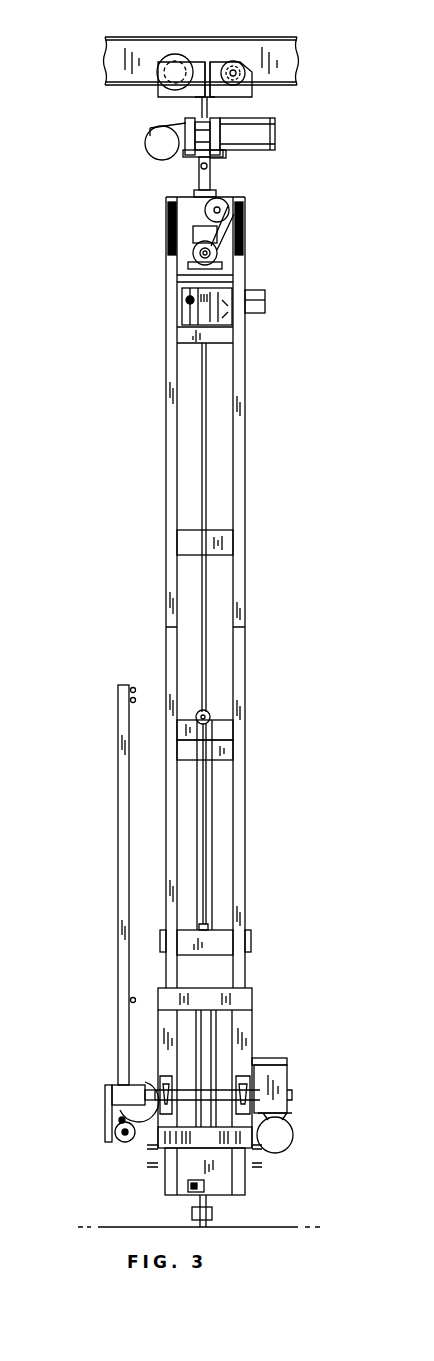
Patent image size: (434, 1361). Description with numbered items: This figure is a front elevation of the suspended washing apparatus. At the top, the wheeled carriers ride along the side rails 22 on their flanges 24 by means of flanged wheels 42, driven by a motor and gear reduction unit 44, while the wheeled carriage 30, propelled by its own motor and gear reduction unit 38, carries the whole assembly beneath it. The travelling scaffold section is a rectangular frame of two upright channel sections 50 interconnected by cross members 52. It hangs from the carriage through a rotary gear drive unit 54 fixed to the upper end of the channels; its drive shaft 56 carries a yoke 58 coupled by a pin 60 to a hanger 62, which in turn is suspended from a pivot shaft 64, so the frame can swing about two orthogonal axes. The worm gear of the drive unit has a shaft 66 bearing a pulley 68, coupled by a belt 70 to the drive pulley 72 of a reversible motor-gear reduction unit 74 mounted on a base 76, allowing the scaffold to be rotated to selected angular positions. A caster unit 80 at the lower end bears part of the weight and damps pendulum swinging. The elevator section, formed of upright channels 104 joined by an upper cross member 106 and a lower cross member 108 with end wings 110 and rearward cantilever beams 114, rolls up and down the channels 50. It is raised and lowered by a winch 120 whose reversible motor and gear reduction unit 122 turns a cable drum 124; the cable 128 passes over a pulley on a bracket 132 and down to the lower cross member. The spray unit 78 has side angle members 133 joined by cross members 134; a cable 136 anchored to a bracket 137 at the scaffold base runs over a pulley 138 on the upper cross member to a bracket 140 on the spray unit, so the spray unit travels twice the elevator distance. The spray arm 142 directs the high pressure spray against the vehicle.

The side rail 22 is at (108, 52).
The flange 24 is at (108, 84).
The wheeled carriage 30 is at (138, 140).
The motor and gear reduction unit 38 is at (258, 120).
The flanged wheel 42 is at (234, 58).
The motor and gear reduction unit 44 is at (172, 55).
The channel section 50 is at (172, 421).
The cross member 52 is at (226, 544).
The rotary gear drive unit 54 is at (190, 210).
The drive shaft 56 is at (212, 194).
The yoke 58 is at (198, 190).
The pin 60 is at (200, 174).
The hanger 62 is at (198, 162).
The pivot shaft 64 is at (224, 156).
The shaft 66 is at (241, 229).
The pulley 68 is at (231, 212).
The belt 70 is at (205, 240).
The drive pulley 72 is at (195, 256).
The reversible motor-gear reduction unit 74 is at (222, 264).
The base 76 is at (190, 280).
The spray unit 78 is at (80, 1109).
The caster unit 80 is at (230, 1217).
The channel 104 is at (172, 648).
The upper cross member 106 is at (228, 726).
The lower cross member 108 is at (226, 932).
The end wing 110 is at (160, 940).
The cantilever beam 114 is at (256, 1158).
The winch 120 is at (259, 320).
The reversible motor and gear reduction unit 122 is at (266, 300).
The cable drum 124 is at (185, 298).
The cable 128 is at (200, 461).
The bracket 132 is at (190, 337).
The side angle member 133 is at (162, 1030).
The cross member 134 is at (246, 1002).
The cable 136 is at (214, 819).
The bracket 137 is at (190, 1193).
The pulley 138 is at (210, 712).
The bracket 140 is at (226, 1170).
The spray arm 142 is at (109, 772).